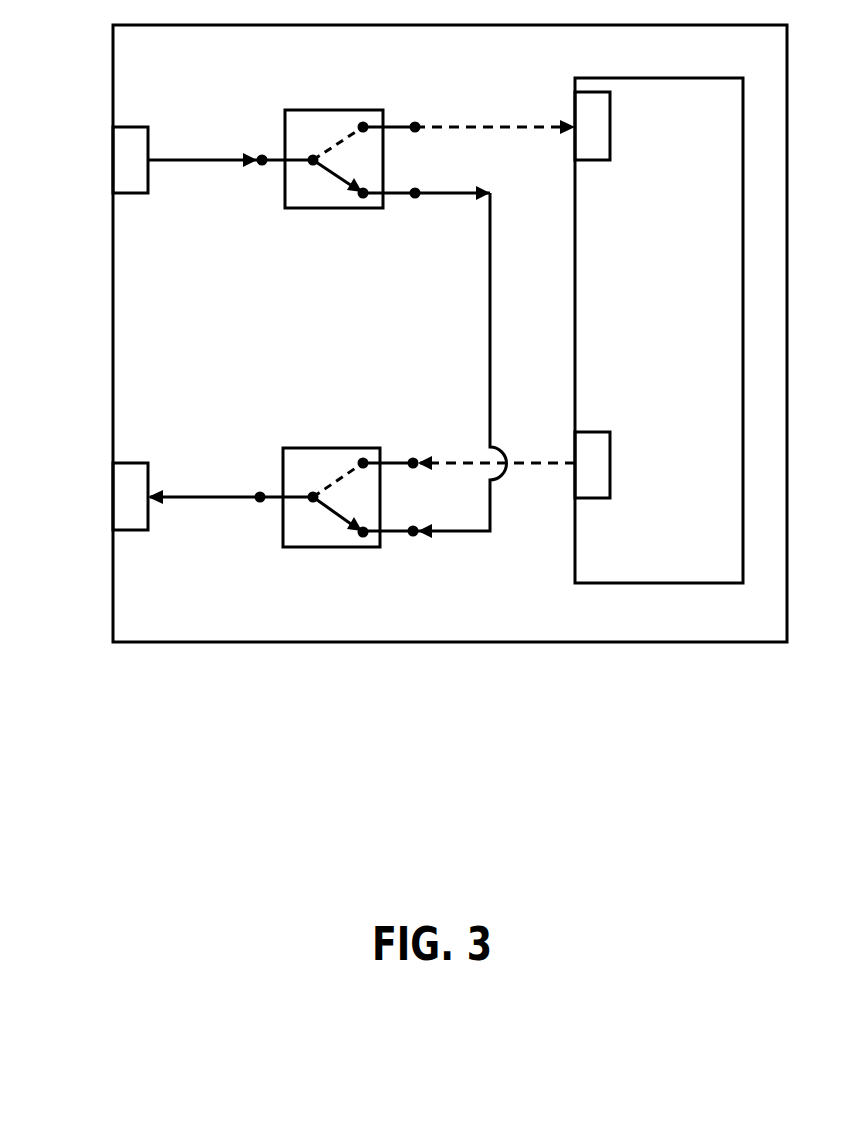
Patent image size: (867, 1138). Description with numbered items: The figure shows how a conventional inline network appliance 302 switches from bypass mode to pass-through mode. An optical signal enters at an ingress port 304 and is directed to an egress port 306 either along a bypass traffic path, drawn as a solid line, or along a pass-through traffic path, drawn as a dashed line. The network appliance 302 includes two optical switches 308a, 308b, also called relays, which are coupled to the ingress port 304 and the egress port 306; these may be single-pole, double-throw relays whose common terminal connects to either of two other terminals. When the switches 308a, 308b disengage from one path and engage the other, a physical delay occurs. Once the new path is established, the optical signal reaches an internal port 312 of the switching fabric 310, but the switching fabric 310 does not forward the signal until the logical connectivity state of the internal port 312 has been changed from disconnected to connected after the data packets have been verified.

The network appliance 302 is at (450, 333).
The ingress port 304 is at (87, 157).
The egress port 306 is at (88, 499).
The optical switch 308a is at (325, 210).
The optical switch 308b is at (330, 448).
The switching fabric 310 is at (659, 330).
The internal port 312 is at (610, 130).